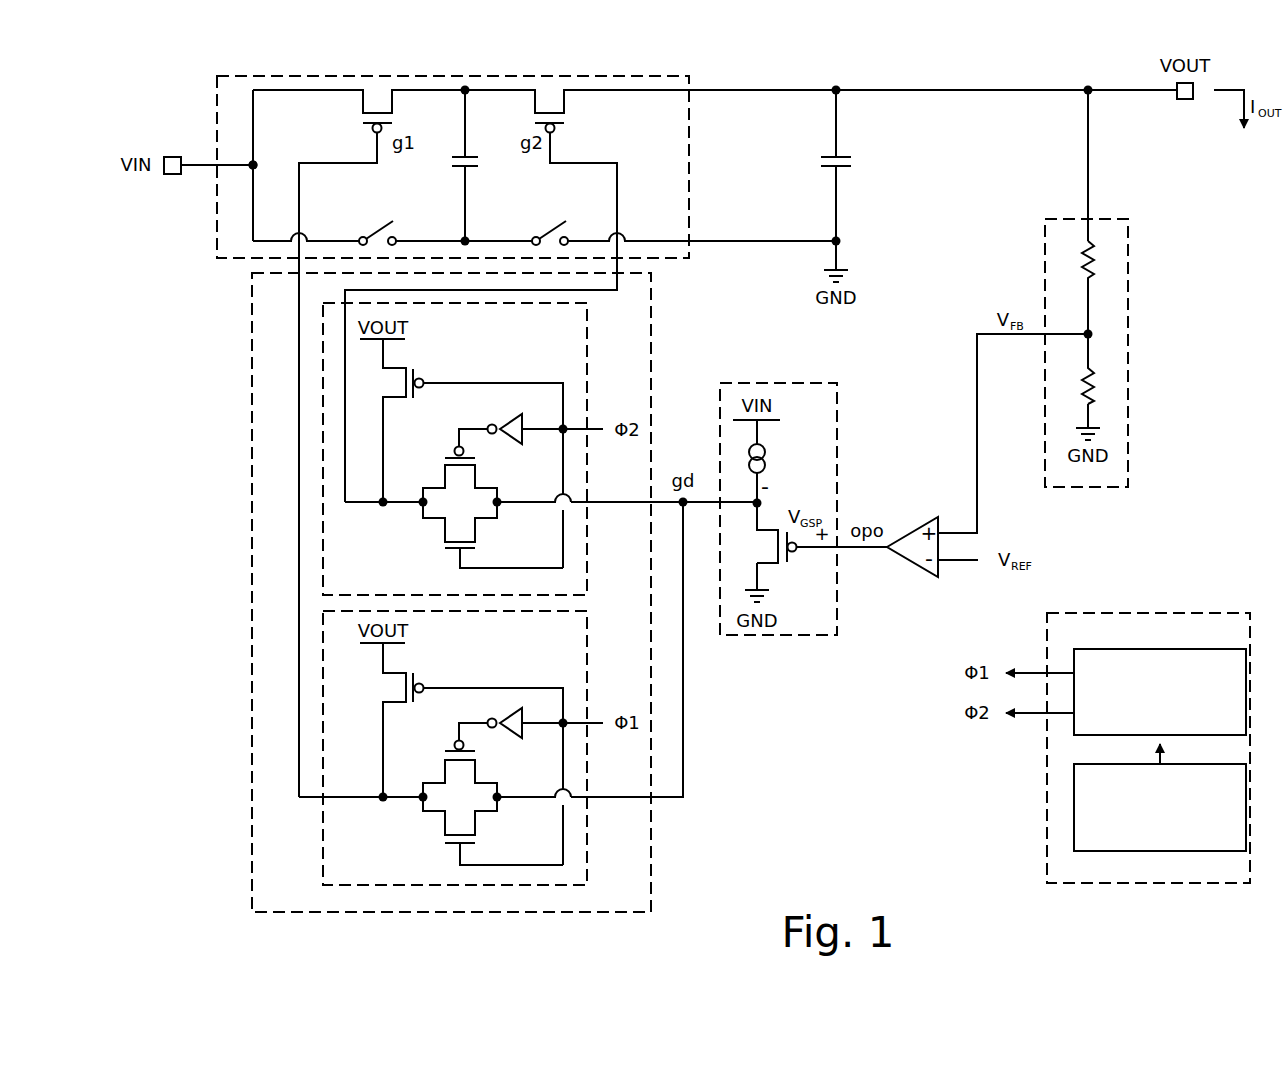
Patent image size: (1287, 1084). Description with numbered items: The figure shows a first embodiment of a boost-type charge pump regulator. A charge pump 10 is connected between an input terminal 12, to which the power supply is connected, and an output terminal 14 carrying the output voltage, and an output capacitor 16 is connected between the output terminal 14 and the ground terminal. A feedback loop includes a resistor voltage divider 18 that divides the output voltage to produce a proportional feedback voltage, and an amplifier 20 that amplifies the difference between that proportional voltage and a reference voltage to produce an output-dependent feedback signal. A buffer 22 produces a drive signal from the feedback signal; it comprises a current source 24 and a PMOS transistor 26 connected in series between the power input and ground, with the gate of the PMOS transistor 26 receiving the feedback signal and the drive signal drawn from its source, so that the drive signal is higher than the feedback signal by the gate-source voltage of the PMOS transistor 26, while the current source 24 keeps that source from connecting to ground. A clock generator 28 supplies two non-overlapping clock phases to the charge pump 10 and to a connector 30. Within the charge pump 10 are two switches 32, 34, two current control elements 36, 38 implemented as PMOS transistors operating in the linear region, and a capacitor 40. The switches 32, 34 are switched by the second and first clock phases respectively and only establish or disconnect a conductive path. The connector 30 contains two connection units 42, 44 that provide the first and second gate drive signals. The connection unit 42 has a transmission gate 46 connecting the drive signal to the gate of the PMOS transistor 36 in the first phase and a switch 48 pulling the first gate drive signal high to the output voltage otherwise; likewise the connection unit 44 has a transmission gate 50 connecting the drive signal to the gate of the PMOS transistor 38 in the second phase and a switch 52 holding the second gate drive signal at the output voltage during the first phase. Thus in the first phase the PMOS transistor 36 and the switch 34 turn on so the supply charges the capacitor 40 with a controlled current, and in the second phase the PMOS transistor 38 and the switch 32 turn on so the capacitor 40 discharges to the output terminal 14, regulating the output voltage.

The charge pump 10 is at (689, 165).
The input terminal 12 is at (250, 168).
The output terminal 14 is at (1183, 100).
The output capacitor 16 is at (815, 176).
The resistor voltage divider 18 is at (1128, 335).
The amplifier 20 is at (912, 528).
The buffer 22 is at (753, 382).
The current source 24 is at (775, 456).
The PMOS transistor 26 is at (791, 570).
The clock generator 28 is at (1162, 613).
The connector 30 is at (250, 585).
The switch 32 is at (378, 223).
The switch 34 is at (550, 223).
The current control element 36 is at (350, 115).
The current control element 38 is at (579, 111).
The capacitor 40 is at (453, 175).
The connection unit 42 is at (323, 747).
The connection unit 44 is at (323, 440).
The transmission gate 46 is at (415, 824).
The switch 48 is at (417, 666).
The transmission gate 50 is at (415, 528).
The switch 52 is at (417, 360).